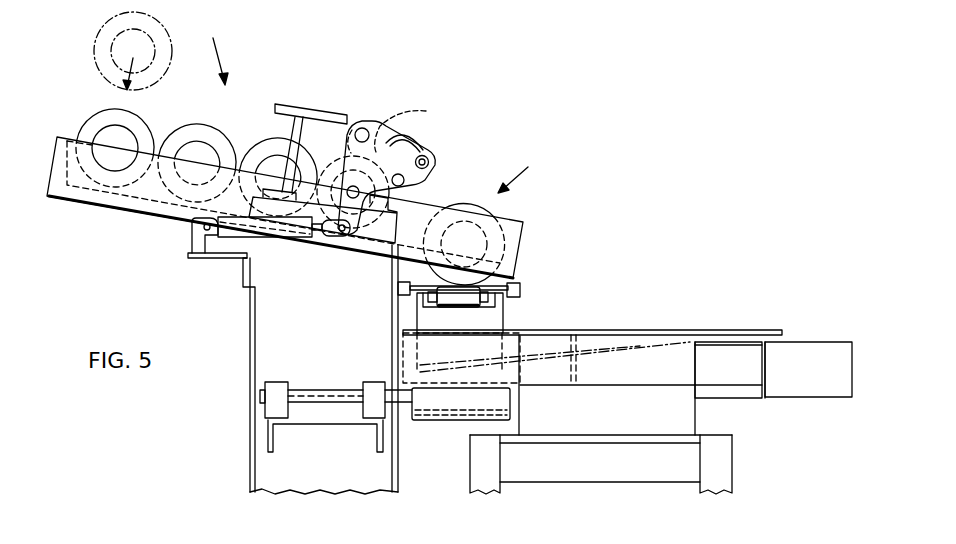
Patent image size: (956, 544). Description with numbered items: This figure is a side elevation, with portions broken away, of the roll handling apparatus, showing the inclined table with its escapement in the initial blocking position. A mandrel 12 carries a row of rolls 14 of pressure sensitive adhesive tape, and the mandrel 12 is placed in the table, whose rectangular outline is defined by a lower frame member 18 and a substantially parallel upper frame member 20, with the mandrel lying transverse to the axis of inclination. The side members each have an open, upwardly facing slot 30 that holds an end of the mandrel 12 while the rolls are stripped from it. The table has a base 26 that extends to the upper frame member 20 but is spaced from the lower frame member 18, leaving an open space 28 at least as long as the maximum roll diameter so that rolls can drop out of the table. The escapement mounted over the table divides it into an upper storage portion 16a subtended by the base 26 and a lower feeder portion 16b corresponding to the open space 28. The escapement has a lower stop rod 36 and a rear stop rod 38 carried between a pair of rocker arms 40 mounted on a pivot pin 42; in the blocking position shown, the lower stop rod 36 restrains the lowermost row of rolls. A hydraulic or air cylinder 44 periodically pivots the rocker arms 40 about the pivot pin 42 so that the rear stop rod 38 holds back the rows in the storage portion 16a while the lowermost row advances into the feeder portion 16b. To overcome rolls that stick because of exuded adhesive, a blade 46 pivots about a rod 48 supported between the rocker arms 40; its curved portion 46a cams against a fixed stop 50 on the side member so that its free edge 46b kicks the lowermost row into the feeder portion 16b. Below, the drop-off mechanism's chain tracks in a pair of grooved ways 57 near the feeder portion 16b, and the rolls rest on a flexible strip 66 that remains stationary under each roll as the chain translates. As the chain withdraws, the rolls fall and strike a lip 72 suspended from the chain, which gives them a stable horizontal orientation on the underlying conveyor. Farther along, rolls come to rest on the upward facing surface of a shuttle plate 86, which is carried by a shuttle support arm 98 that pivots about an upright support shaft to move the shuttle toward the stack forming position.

The mandrel 12 is at (108, 137).
The rolls 14 is at (213, 134).
The upper storage portion 16a is at (210, 50).
The lower feeder portion 16b is at (532, 174).
The lower frame member 18 is at (522, 242).
The upper frame member 20 is at (50, 177).
The base 26 is at (153, 217).
The open space 28 is at (428, 273).
The slot 30 is at (110, 170).
The lower stop rod 36 is at (406, 182).
The rear stop rod 38 is at (363, 128).
The rocker arms 40 is at (378, 126).
The pivot pin 42 is at (354, 199).
The cylinder 44 is at (230, 240).
The blade 46 is at (412, 124).
The curved portion 46a is at (420, 138).
The free edge 46b is at (347, 143).
The rod 48 is at (429, 163).
The fixed stop 50 is at (320, 112).
The grooved ways 57 is at (400, 297).
The flexible strip 66 is at (448, 300).
The lip 72 is at (485, 318).
The shuttle plate 86 is at (733, 342).
The shuttle support arm 98 is at (722, 393).